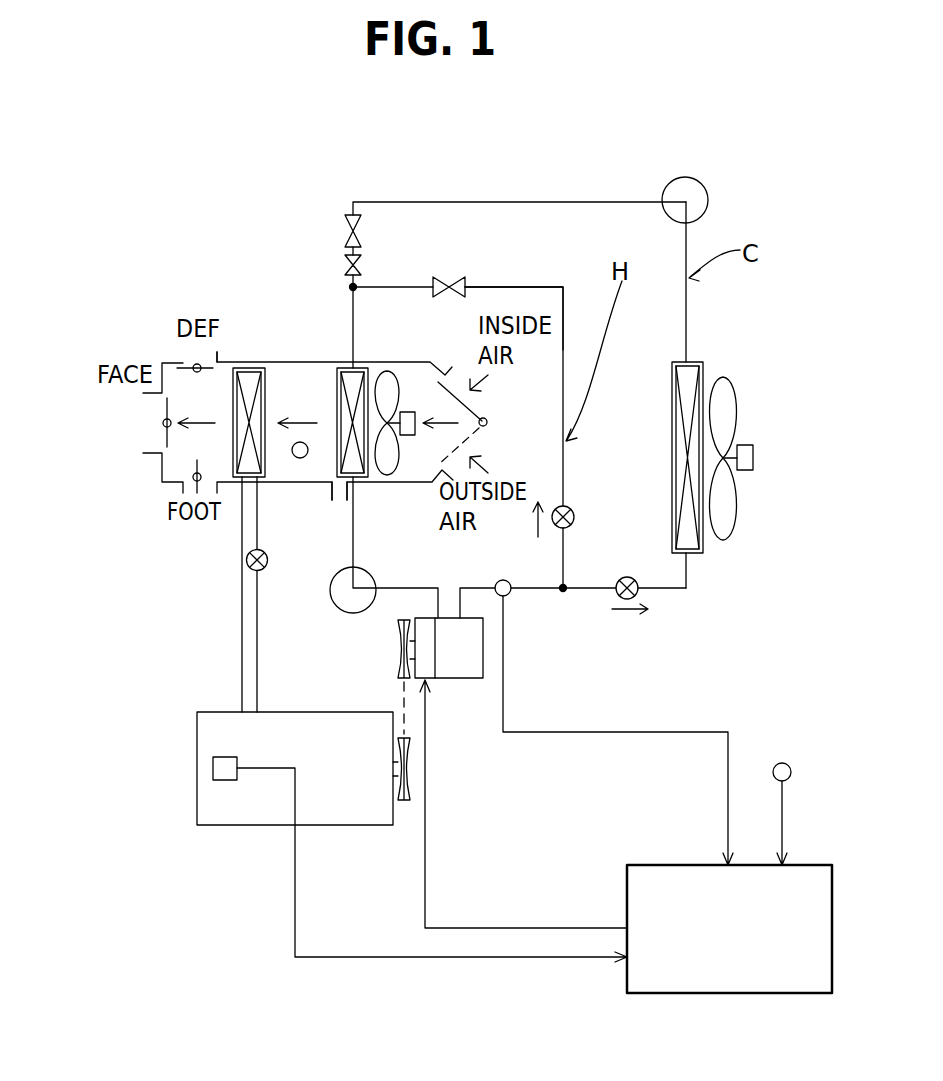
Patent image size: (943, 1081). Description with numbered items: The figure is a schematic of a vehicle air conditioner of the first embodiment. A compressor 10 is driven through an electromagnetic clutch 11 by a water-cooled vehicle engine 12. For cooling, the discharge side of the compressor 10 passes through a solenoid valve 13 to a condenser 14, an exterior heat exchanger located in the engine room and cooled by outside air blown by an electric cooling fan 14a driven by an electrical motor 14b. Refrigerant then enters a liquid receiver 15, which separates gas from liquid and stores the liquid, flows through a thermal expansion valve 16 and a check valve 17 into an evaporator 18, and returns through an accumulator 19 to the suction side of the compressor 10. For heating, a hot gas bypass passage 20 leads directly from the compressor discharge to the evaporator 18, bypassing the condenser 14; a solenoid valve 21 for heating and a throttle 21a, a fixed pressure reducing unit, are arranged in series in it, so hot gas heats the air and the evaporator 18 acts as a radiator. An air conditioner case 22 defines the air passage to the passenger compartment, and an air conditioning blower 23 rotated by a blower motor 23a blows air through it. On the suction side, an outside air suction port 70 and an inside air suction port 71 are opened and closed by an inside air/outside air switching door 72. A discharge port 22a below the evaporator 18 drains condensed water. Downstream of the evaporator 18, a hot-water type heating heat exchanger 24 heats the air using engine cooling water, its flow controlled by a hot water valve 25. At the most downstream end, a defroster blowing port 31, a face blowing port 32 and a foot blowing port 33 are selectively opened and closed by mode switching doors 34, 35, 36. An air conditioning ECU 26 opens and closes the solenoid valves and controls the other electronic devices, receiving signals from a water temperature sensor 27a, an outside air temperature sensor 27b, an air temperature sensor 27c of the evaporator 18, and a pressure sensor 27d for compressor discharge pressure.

The compressor 10 is at (464, 680).
The electromagnetic clutch 11 is at (397, 658).
The vehicle engine 12 is at (248, 820).
The solenoid valve for cooling 13 is at (632, 578).
The condenser 14 is at (672, 410).
The electric cooling fan 14a is at (722, 377).
The electrical motor 14b is at (745, 470).
The liquid receiver 15 is at (700, 180).
The thermal expansion valve 16 is at (347, 231).
The check valve 17 is at (347, 265).
The evaporator 18 is at (347, 372).
The accumulator 19 is at (370, 573).
The hot gas bypass passage 20 is at (507, 287).
The solenoid valve for heating 21 is at (572, 509).
The throttle 21a is at (444, 283).
The air conditioner case 22 is at (242, 362).
The discharge port 22a is at (338, 502).
The air conditioning blower 23 is at (386, 369).
The blower motor 23a is at (407, 412).
The heating heat exchanger 24 is at (265, 455).
The hot water valve 25 is at (248, 568).
The air conditioning electronic control unit 26 is at (627, 982).
The water temperature sensor 27a is at (213, 770).
The outside air temperature sensor 27b is at (782, 763).
The air temperature sensor 27c is at (300, 458).
The pressure sensor 27d is at (507, 597).
The defroster blowing port 31 is at (182, 358).
The face blowing port 32 is at (160, 422).
The foot blowing port 33 is at (188, 493).
The mode switching door 34 is at (183, 367).
The mode switching door 35 is at (163, 437).
The mode switching door 36 is at (193, 469).
The outside air suction port 70 is at (473, 447).
The inside air suction port 71 is at (473, 390).
The inside air/outside air switching door 72 is at (486, 418).